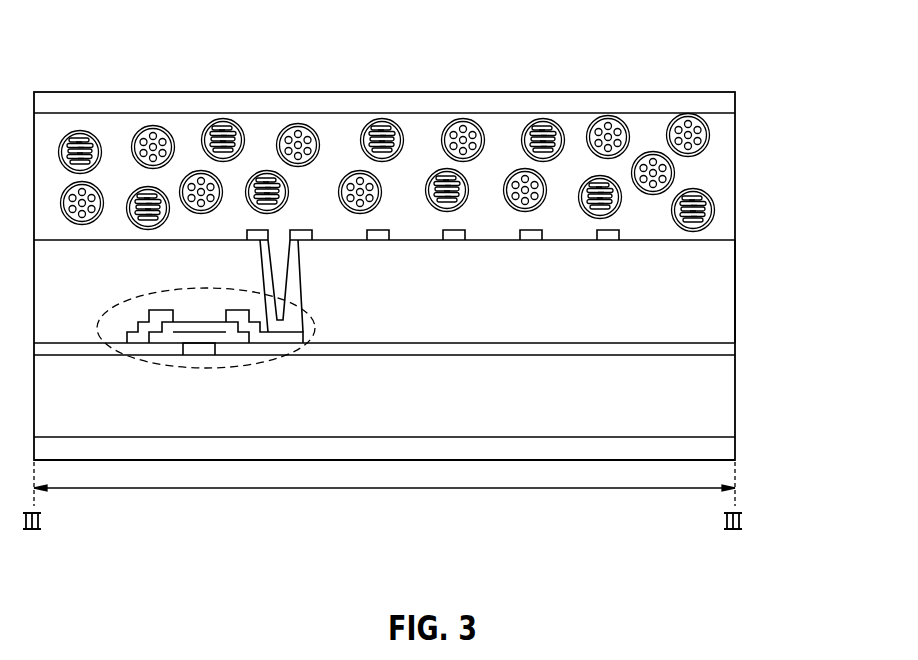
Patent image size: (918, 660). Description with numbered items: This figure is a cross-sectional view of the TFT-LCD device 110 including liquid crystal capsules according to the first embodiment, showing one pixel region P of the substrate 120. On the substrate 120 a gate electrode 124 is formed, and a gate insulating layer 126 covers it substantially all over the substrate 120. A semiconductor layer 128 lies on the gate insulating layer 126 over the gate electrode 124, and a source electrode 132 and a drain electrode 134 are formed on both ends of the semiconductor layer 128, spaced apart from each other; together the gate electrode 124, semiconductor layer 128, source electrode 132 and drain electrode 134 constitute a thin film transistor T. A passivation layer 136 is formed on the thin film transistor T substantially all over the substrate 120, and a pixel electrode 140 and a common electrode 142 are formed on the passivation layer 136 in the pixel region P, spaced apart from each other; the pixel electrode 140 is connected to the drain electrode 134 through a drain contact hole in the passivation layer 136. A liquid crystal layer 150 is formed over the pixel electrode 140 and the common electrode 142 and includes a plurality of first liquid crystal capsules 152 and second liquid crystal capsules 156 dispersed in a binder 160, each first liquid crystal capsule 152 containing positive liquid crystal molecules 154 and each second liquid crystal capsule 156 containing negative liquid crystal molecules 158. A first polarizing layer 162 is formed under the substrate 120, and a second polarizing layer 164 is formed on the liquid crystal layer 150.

The TFT-LCD device 110 is at (408, 62).
The substrate 120 is at (731, 427).
The gate electrode 124 is at (197, 355).
The gate insulating layer 126 is at (718, 352).
The semiconductor layer 128 is at (242, 335).
The source electrode 132 is at (137, 335).
The drain electrode 134 is at (285, 337).
The passivation layer 136 is at (718, 298).
The pixel electrode 140 is at (292, 270).
The common electrode 142 is at (377, 240).
The liquid crystal layer 150 is at (810, 122).
The first liquid crystal capsules 152 is at (706, 193).
The positive liquid crystal molecules 154 is at (714, 207).
The second liquid crystal capsules 156 is at (708, 127).
The negative liquid crystal molecules 158 is at (712, 141).
The binder 160 is at (718, 230).
The first polarizing layer 162 is at (718, 452).
The second polarizing layer 164 is at (717, 103).
The thin film transistor T is at (95, 331).
The pixel region P is at (384, 492).